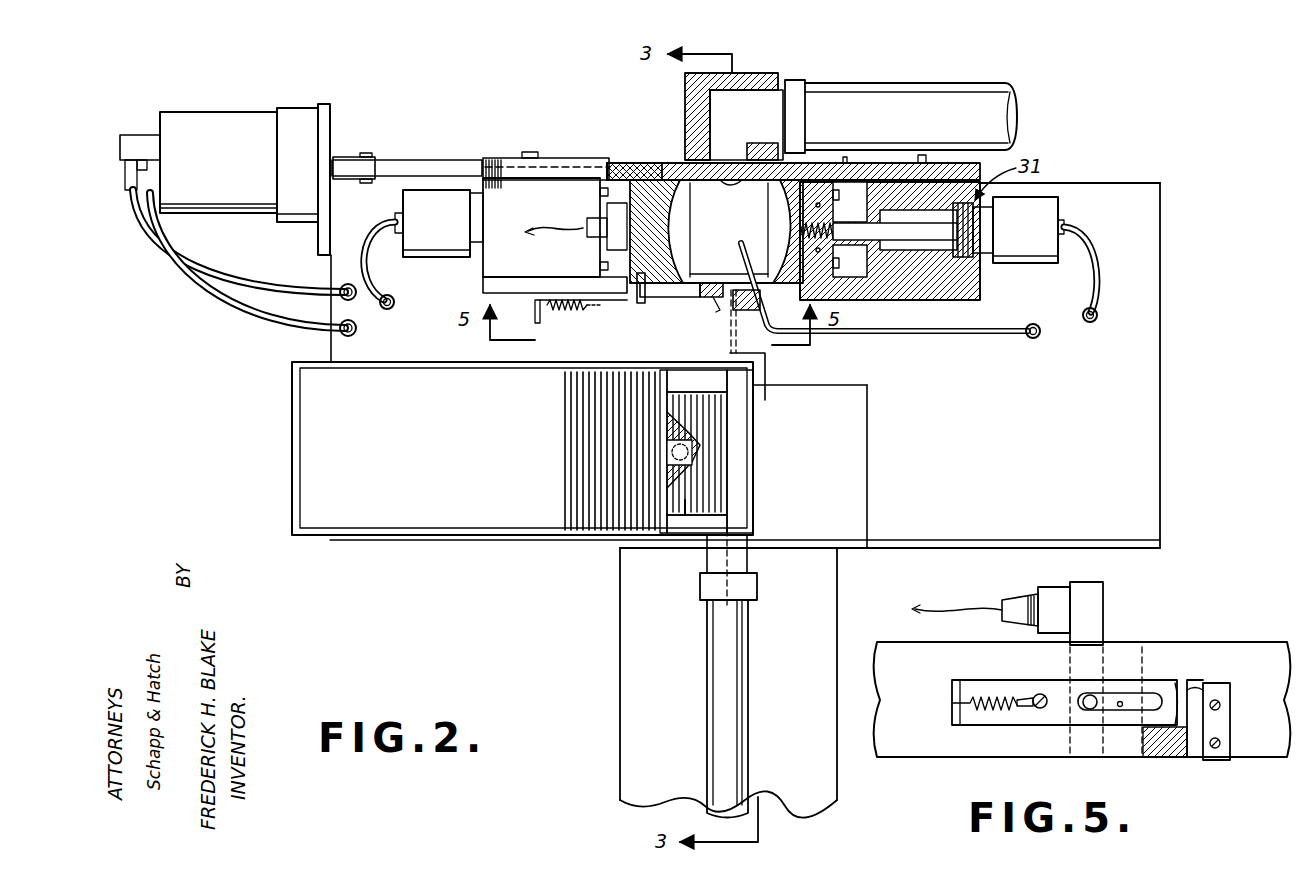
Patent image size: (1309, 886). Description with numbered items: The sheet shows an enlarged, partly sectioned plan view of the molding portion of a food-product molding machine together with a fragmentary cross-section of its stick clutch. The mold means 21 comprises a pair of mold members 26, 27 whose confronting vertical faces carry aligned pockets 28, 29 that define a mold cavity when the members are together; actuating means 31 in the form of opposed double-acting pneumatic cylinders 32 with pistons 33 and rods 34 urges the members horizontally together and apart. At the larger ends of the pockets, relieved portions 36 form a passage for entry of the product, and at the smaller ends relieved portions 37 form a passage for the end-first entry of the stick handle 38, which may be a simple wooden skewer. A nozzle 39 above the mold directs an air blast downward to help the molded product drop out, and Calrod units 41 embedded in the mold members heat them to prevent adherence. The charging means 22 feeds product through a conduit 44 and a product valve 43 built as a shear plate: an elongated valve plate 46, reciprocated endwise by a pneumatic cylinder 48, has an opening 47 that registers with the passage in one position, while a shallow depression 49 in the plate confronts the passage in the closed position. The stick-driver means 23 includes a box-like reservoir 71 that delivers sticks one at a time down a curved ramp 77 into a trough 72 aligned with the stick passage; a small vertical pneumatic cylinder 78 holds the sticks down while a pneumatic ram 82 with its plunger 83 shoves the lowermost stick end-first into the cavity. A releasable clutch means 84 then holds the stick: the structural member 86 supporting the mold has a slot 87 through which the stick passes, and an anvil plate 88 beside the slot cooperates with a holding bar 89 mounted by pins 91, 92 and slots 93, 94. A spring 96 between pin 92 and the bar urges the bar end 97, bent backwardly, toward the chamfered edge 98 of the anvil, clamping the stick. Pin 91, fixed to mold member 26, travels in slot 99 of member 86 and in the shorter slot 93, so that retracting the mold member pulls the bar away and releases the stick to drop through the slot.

In FIG. 2, the mold means 21 is at (610, 258).
In FIG. 2, the charging means 22 is at (770, 145).
In FIG. 2, the stick-driver means 23 is at (745, 463).
In FIG. 2, the mold member 26 is at (672, 180).
In FIG. 2, the mold member 27 is at (790, 182).
In FIG. 2, the pocket 28 is at (678, 218).
In FIG. 2, the pocket 29 is at (780, 218).
In FIG. 2, the actuating means 31 is at (462, 186).
In FIG. 2, the double-acting pneumatic cylinder 32 is at (905, 290).
In FIG. 2, the piston 33 is at (970, 258).
In FIG. 2, the rod 34 is at (945, 292).
In FIG. 2, the relieved portion 36 is at (722, 186).
In FIG. 2, the relieved portion 37 is at (740, 258).
In FIG. 2, the stick handle 38 is at (575, 442).
In FIG. 2, the nozzle 39 is at (748, 245).
In FIG. 2, the Calrod unit 41 is at (822, 205).
In FIG. 2, the product valve 43 is at (745, 158).
In FIG. 2, the conduit 44 is at (968, 98).
In FIG. 2, the valve plate 46 is at (845, 163).
In FIG. 2, the opening 47 is at (635, 163).
In FIG. 2, the double-acting pneumatic cylinder 48 is at (246, 128).
In FIG. 2, the shallow depression 49 is at (710, 160).
In FIG. 2, the reservoir 71 is at (292, 450).
In FIG. 2, the trough 72 is at (730, 496).
In FIG. 2, the curved ramp 77 is at (683, 518).
In FIG. 2, the double-acting pneumatic cylinder 78 is at (700, 445).
In FIG. 2, the double-acting pneumatic ram 82 is at (742, 636).
In FIG. 2, the plunger 83 is at (730, 562).
In FIG. 2, the releasable clutch means 84 is at (660, 330).
In FIG. 5, the releasable clutch means 84 is at (1196, 643).
In FIG. 2, the structural member 86 is at (850, 300).
In FIG. 5, the structural member 86 is at (1222, 648).
In FIG. 2, the slot 87 is at (740, 322).
In FIG. 5, the slot 87 is at (1190, 740).
In FIG. 2, the anvil plate 88 is at (760, 300).
In FIG. 5, the anvil plate 88 is at (1230, 722).
In FIG. 2, the holding bar 89 is at (535, 300).
In FIG. 5, the holding bar 89 is at (1042, 727).
In FIG. 2, the pin 91 is at (640, 292).
In FIG. 5, the pin 91 is at (1090, 695).
In FIG. 2, the pin 92 is at (568, 312).
In FIG. 5, the pin 92 is at (1040, 694).
In FIG. 2, the slot 93 is at (640, 303).
In FIG. 5, the slot 93 is at (1133, 693).
In FIG. 5, the slot 94 is at (1025, 708).
In FIG. 2, the spring 96 is at (538, 323).
In FIG. 5, the spring 96 is at (1008, 697).
In FIG. 2, the end of bar 97 is at (715, 310).
In FIG. 5, the end of bar 97 is at (1185, 695).
In FIG. 5, the chamfered edge 98 is at (1200, 692).
In FIG. 2, the slot 99 is at (662, 297).
In FIG. 5, the slot 99 is at (1120, 708).